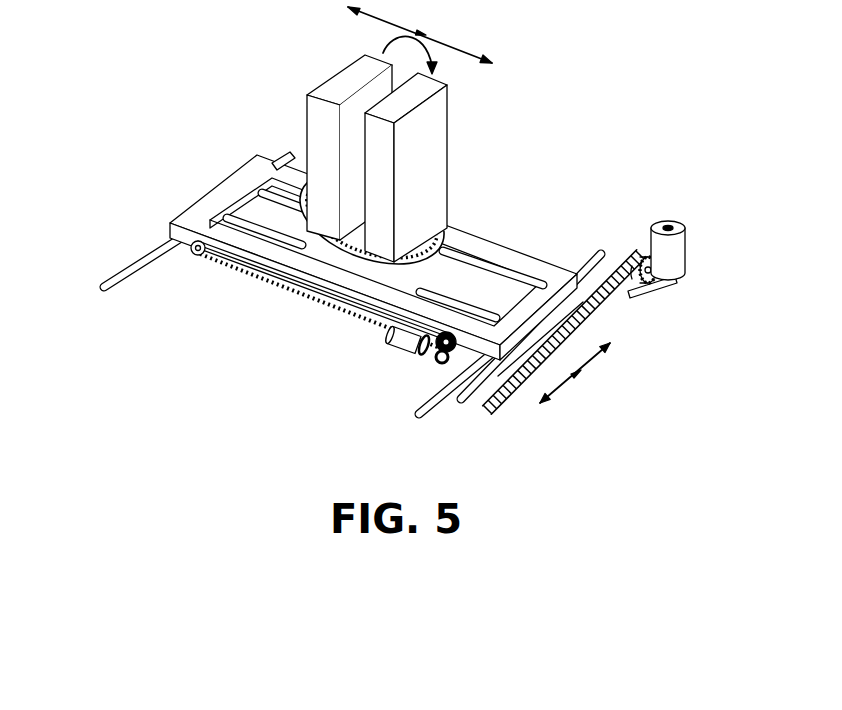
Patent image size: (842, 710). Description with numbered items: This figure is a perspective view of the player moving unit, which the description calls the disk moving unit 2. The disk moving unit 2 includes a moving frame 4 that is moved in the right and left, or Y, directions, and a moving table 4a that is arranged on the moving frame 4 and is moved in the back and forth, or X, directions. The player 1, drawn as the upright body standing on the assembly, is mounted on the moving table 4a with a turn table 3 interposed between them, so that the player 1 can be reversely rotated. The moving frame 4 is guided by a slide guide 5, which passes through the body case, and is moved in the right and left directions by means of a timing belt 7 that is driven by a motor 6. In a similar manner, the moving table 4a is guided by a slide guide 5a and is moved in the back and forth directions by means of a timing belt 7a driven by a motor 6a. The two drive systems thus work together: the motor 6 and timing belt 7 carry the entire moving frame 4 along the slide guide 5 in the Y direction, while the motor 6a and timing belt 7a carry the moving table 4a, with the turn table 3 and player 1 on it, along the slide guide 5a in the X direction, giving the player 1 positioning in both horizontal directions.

The player 1 is at (447, 133).
The disk moving unit 2 is at (420, 228).
The turn table 3 is at (445, 228).
The moving frame 4 is at (202, 193).
The moving table 4a is at (490, 243).
The slide guide 5 is at (441, 407).
The slide guide 5a is at (273, 167).
The motor 6 is at (687, 253).
The motor 6a is at (397, 350).
The timing belt 7 is at (593, 317).
The timing belt 7a is at (326, 309).